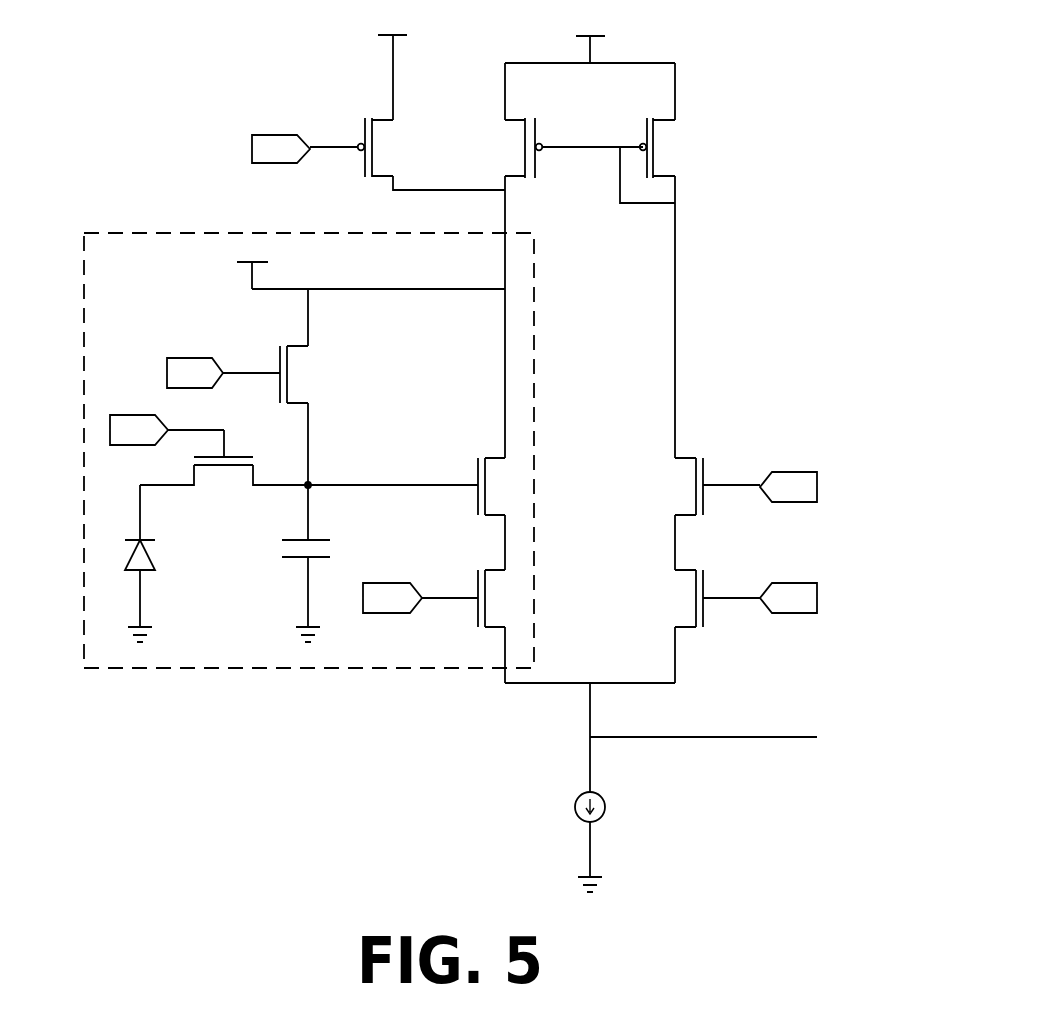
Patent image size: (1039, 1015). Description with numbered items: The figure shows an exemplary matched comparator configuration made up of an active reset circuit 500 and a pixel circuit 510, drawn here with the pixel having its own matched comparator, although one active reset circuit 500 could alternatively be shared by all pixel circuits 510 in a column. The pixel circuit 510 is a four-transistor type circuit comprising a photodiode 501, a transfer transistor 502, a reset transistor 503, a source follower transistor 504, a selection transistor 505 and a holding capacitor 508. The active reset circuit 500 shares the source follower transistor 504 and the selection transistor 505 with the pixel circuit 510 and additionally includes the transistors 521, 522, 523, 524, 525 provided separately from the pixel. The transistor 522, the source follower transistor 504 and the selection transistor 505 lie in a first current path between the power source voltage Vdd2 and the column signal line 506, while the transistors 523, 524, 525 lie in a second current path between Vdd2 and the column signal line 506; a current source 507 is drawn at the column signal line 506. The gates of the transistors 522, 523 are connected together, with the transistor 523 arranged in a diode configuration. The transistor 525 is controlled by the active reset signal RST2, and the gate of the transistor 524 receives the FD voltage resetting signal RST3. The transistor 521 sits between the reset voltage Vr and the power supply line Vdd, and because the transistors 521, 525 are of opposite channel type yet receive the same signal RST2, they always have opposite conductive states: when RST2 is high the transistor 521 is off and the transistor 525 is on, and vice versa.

The active reset circuit 500 is at (777, 31).
The photodiode 501 is at (133, 557).
The transfer transistor 502 is at (196, 474).
The reset transistor 503 is at (280, 348).
The source follower transistor 504 is at (497, 514).
The selection transistor 505 is at (497, 627).
The column signal line 506 is at (720, 737).
The current source 507 is at (605, 797).
The holding capacitor 508 is at (292, 558).
The pixel circuit 510 is at (477, 659).
The transistor 521 is at (362, 176).
The transistor 522 is at (513, 176).
The transistor 523 is at (667, 176).
The transistor 524 is at (686, 517).
The transistor 525 is at (686, 630).